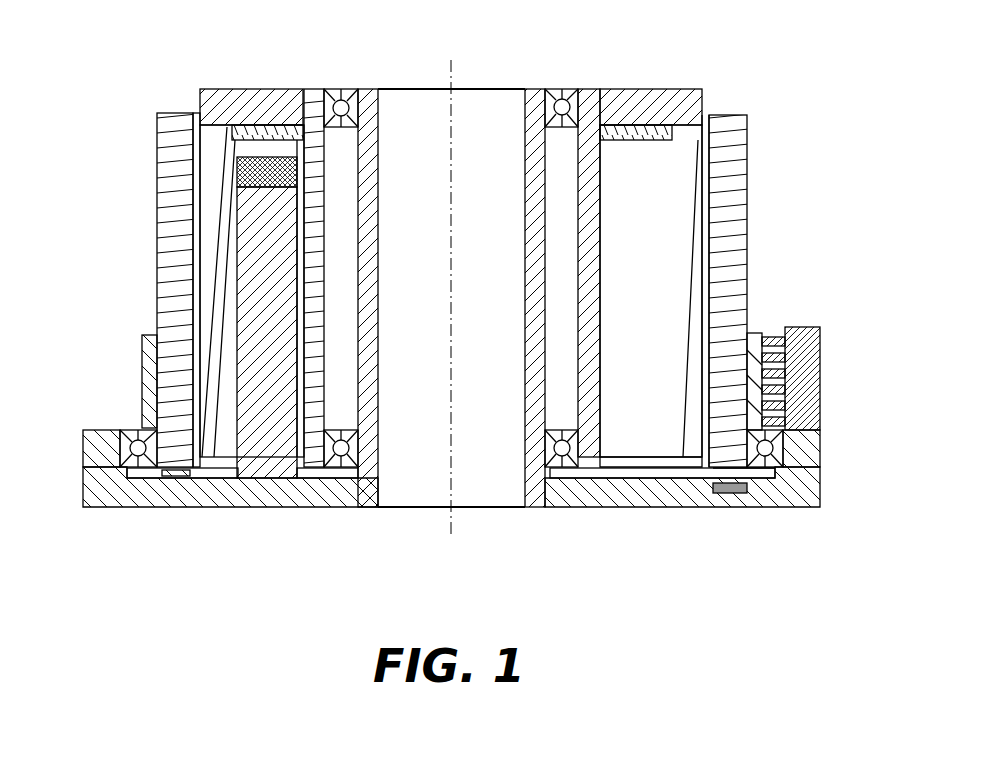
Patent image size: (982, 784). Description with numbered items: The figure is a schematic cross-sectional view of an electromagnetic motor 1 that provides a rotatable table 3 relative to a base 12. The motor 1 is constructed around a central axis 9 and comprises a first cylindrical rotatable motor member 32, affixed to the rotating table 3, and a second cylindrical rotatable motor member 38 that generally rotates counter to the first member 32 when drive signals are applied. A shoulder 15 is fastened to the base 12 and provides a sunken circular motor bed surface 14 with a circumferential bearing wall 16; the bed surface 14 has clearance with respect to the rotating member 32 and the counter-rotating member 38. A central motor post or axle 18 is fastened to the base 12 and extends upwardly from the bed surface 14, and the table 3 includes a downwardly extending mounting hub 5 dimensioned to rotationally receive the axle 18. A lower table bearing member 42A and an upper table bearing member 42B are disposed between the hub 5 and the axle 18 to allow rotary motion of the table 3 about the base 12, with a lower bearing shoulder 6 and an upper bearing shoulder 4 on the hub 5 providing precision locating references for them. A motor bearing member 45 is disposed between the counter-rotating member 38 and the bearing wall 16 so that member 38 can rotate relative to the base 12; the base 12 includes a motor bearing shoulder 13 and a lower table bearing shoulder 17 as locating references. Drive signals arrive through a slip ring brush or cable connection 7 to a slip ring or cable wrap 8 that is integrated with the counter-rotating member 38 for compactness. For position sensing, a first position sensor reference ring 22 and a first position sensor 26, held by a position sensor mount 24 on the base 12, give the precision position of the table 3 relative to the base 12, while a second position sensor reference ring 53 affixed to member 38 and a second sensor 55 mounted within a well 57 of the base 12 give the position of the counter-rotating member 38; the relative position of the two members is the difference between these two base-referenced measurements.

The electromagnetic motor 1 is at (492, 52).
The rotatable table 3 is at (687, 88).
The upper bearing shoulder 4 is at (577, 125).
The mounting hub 5 is at (587, 202).
The lower bearing shoulder 6 is at (332, 467).
The slip ring brush or cable connection 7 is at (808, 348).
The slip ring or cable wrap 8 is at (148, 360).
The central axis 9 is at (450, 70).
The base 12 is at (97, 482).
The motor bearing shoulder 13 is at (125, 460).
The circular motor bed surface 14 is at (208, 468).
The shoulder 15 is at (100, 448).
The circumferential bearing wall 16 is at (130, 432).
The lower table bearing shoulder 17 is at (362, 492).
The motor post or axle 18 is at (532, 97).
The first position sensor reference ring 22 is at (265, 120).
The position sensor mount 24 is at (250, 187).
The first position sensor 26 is at (262, 160).
The first cylindrical rotatable motor member 32 is at (210, 212).
The second cylindrical rotatable motor member 38 is at (172, 262).
The lower table bearing member 42A is at (552, 424).
The upper table bearing member 42B is at (554, 133).
The motor bearing member 45 is at (133, 418).
The second position sensor reference ring 53 is at (743, 470).
The second sensor 55 is at (733, 488).
The well 57 is at (707, 482).